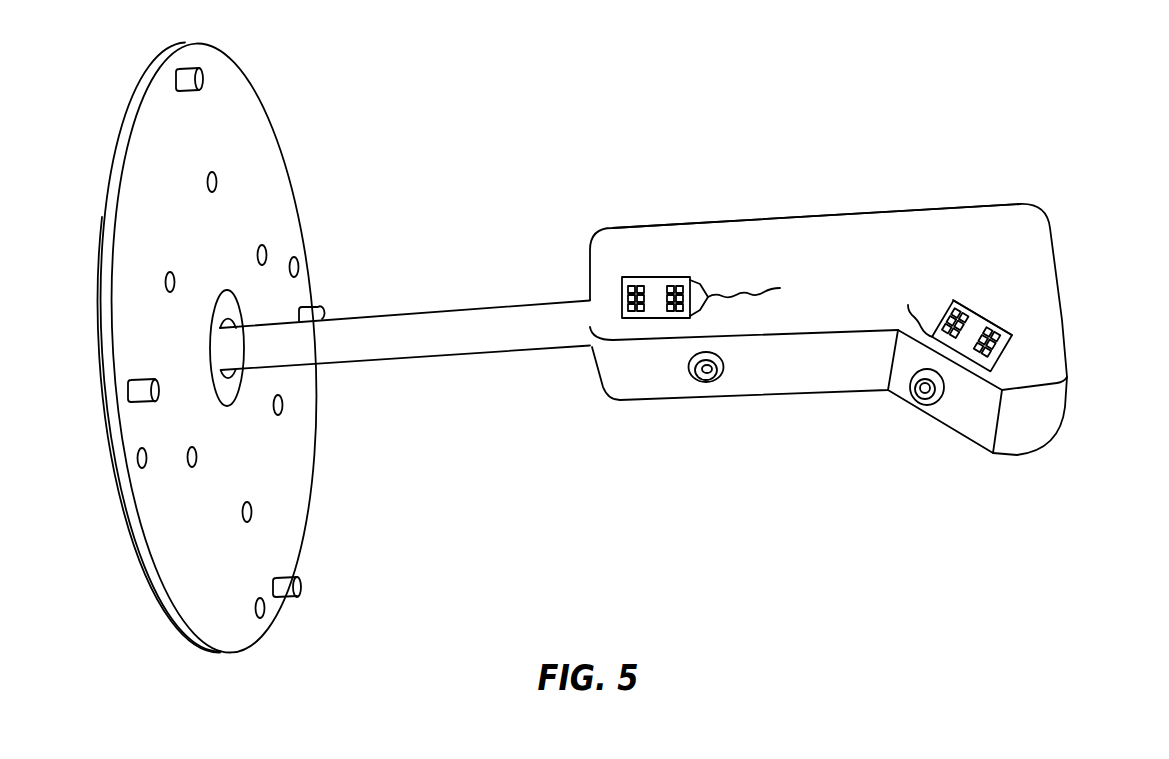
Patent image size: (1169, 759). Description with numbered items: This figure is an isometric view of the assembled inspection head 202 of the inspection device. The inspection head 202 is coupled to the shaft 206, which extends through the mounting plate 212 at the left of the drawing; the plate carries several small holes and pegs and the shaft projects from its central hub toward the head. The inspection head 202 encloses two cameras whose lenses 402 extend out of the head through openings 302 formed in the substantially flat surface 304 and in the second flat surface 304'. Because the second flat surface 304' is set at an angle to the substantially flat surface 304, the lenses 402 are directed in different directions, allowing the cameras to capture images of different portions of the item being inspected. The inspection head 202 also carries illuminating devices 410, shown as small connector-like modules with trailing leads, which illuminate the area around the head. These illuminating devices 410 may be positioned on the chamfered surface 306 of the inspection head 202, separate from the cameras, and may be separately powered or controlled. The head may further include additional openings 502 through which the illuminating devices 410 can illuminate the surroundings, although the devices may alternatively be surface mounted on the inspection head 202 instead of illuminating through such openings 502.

The mounting plate 212 is at (218, 140).
The shaft 206 is at (457, 340).
The inspection head 202 is at (821, 339).
The chamfered surface 306 is at (887, 293).
The substantially flat surface 304 is at (737, 409).
The second flat surface 304' is at (945, 467).
The illuminating devices 410 is at (677, 283).
The additional openings 502 is at (970, 307).
The openings 302 is at (727, 357).
The lenses 402 is at (706, 380).